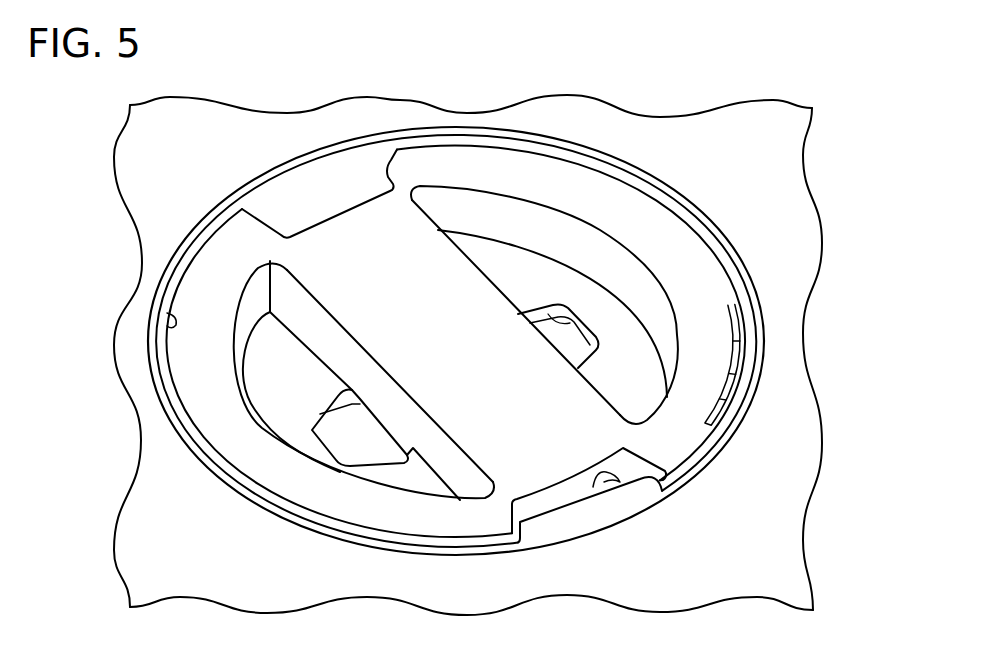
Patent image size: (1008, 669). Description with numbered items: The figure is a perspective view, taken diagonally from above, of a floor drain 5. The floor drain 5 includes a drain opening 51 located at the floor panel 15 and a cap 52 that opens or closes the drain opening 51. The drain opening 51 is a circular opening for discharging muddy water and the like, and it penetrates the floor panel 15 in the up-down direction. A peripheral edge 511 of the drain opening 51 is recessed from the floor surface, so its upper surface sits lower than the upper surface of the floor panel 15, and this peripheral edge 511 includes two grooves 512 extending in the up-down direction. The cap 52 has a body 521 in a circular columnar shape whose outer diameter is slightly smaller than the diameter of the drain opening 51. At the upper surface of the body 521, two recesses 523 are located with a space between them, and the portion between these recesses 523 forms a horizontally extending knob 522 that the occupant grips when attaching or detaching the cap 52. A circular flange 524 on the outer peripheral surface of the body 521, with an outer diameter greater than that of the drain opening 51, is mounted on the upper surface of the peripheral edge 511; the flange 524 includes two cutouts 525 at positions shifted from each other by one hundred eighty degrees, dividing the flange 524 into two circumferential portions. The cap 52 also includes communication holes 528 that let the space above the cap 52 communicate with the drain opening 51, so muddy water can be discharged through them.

The floor drain 5 is at (285, 134).
The floor panel 15 is at (155, 184).
The drain opening 51 is at (598, 488).
The peripheral edge 511 is at (547, 533).
The grooves 512 is at (172, 322).
The cap 52 is at (465, 148).
The body 521 is at (362, 196).
The knob 522 is at (453, 287).
The recesses 523 is at (570, 228).
The flange 524 is at (297, 513).
The cutouts 525 is at (262, 196).
The communication holes 528 is at (575, 327).